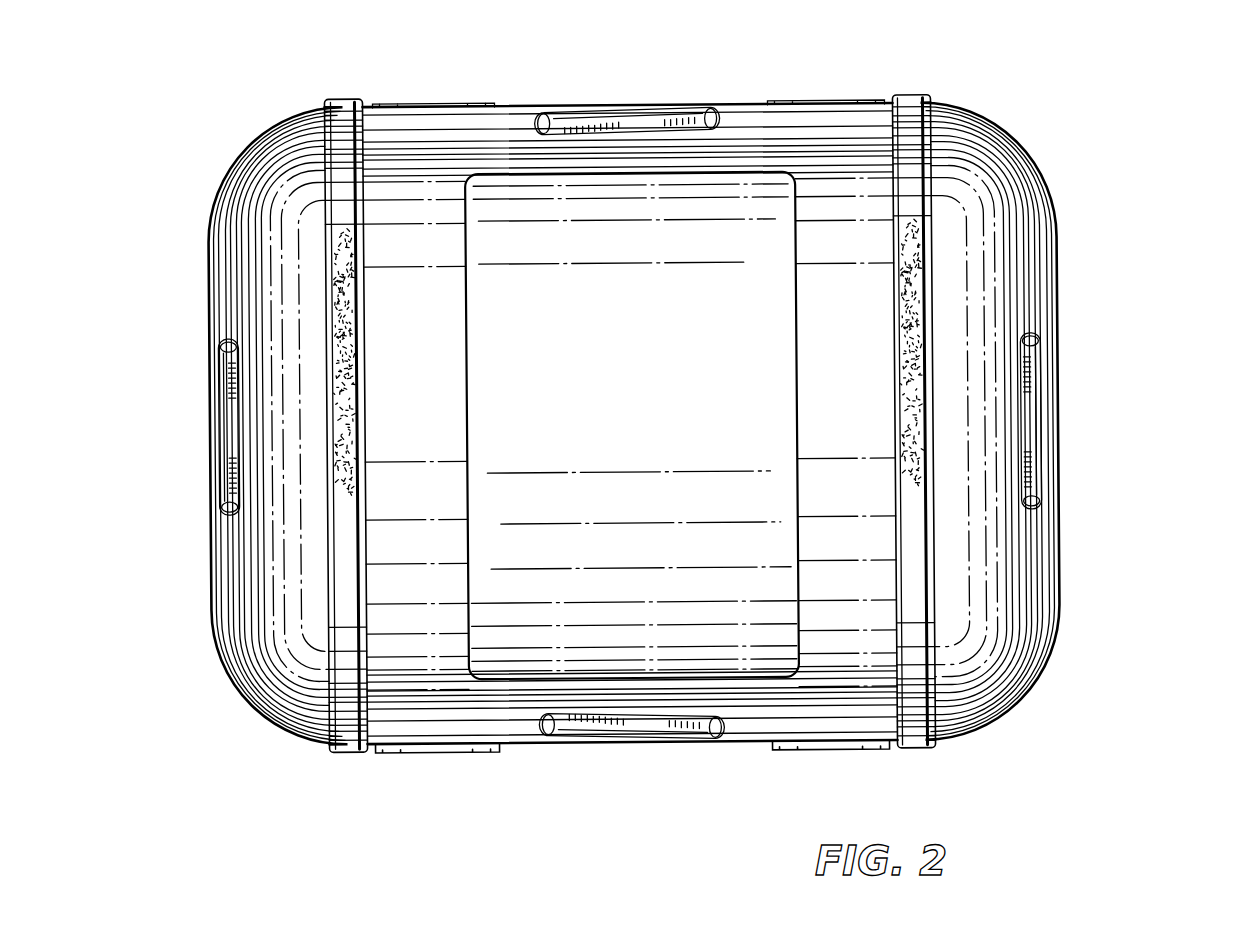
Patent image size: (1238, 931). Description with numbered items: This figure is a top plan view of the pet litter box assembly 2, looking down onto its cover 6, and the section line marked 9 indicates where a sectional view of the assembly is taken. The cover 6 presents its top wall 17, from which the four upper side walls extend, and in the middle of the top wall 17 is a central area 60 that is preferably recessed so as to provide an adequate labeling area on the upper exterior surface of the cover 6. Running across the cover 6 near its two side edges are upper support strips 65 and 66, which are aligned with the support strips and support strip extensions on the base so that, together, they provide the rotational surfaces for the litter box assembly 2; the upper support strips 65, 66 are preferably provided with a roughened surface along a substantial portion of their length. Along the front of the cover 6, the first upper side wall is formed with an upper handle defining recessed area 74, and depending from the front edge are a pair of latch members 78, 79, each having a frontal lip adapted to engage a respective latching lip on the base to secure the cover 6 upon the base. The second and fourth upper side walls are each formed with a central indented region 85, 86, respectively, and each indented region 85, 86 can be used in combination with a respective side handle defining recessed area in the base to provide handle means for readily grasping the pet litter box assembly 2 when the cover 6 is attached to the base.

The pet litter box assembly 2 is at (1055, 108).
The cover 6 is at (1030, 311).
The top wall 17 is at (877, 310).
The central area 60 is at (657, 421).
The upper support strip 65 is at (342, 604).
The upper support strip 66 is at (913, 594).
The upper handle defining recessed area 74 is at (623, 727).
The latch member 78 is at (440, 753).
The latch member 79 is at (834, 748).
The central indented region 85 is at (230, 453).
The central indented region 86 is at (1033, 408).
The section line 9- 9 is at (118, 445).